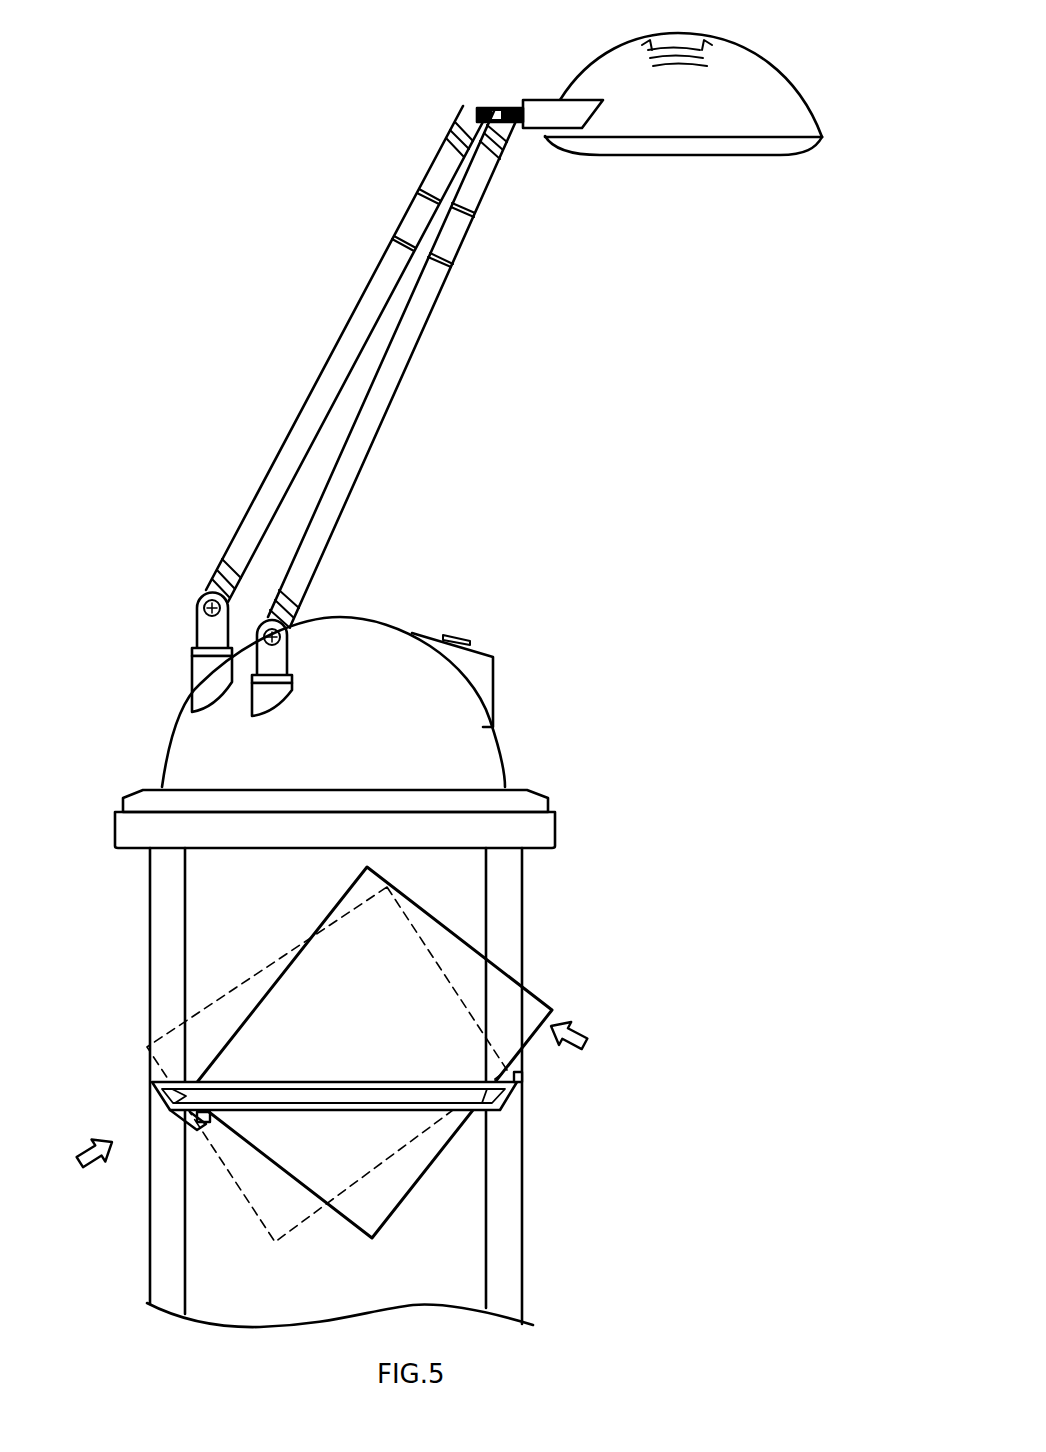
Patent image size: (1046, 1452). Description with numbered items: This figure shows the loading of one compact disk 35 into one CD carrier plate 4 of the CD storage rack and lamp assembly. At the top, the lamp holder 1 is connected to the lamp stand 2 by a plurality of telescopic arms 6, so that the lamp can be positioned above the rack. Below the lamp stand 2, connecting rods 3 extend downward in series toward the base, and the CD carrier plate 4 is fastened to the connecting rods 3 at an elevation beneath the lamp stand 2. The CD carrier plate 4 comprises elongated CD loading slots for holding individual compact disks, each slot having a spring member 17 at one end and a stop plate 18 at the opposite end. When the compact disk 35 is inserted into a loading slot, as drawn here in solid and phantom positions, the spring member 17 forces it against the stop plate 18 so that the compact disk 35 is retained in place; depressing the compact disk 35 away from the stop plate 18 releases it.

The lamp holder 1 is at (780, 95).
The telescopic arms 6 is at (360, 440).
The lamp stand 2 is at (483, 740).
The connecting rods 3 is at (497, 900).
The compact disk 35 is at (497, 998).
The CD carrier plate 4 is at (520, 1097).
The stop plate 18 is at (520, 1078).
The spring member 17 is at (197, 1122).